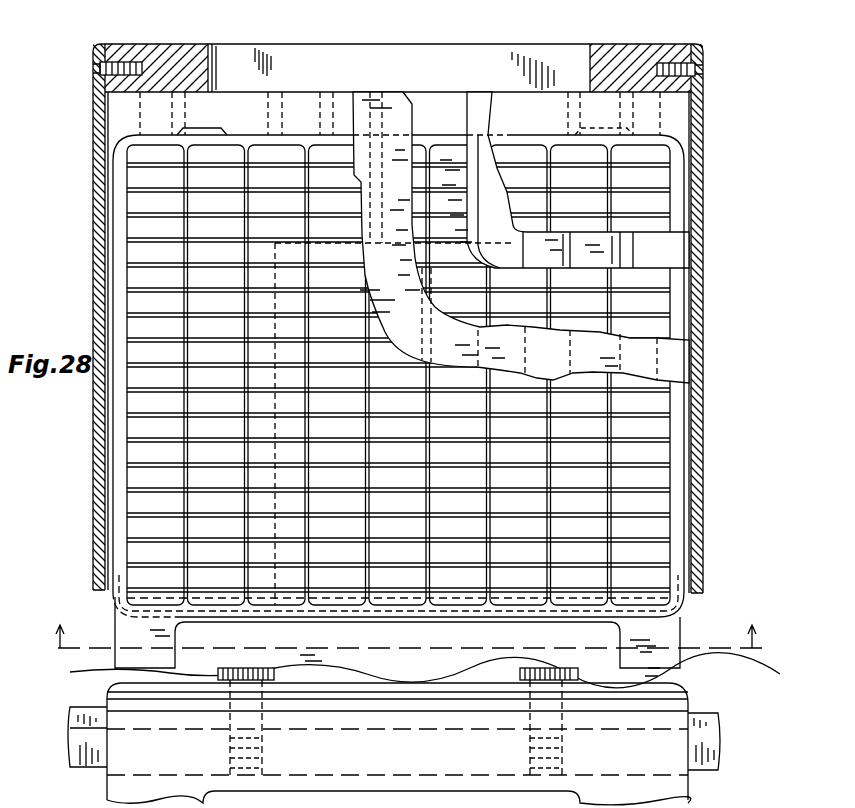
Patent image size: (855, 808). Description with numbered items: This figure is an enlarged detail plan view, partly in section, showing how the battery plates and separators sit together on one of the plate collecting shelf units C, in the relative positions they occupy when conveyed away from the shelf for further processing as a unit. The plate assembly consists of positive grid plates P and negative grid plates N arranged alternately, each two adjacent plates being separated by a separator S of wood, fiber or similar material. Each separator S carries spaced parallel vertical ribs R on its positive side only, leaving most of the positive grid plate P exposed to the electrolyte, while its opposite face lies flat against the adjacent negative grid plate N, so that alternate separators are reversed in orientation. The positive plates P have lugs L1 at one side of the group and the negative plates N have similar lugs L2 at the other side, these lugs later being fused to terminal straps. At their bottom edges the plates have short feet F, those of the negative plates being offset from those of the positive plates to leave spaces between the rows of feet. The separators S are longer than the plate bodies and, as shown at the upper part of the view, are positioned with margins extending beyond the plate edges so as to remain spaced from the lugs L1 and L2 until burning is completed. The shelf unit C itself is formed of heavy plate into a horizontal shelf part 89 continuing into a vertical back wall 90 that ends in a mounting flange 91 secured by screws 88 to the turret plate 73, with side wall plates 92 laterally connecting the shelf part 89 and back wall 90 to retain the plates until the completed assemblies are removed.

The plate collecting shelf unit C is at (716, 70).
The vertical back wall 90 is at (660, 65).
The side wall plate 92 is at (98, 432).
The positive grid plate P is at (673, 306).
The feet F is at (202, 130).
The separator S is at (675, 122).
The rib R is at (628, 255).
The negative grid plate N is at (675, 197).
The horizontal shelf part 89 is at (703, 543).
The lug L1 is at (648, 640).
The lug L2 is at (158, 640).
The mounting flange 91 is at (672, 704).
The turret plate 73 is at (712, 739).
The screw 88 is at (272, 670).